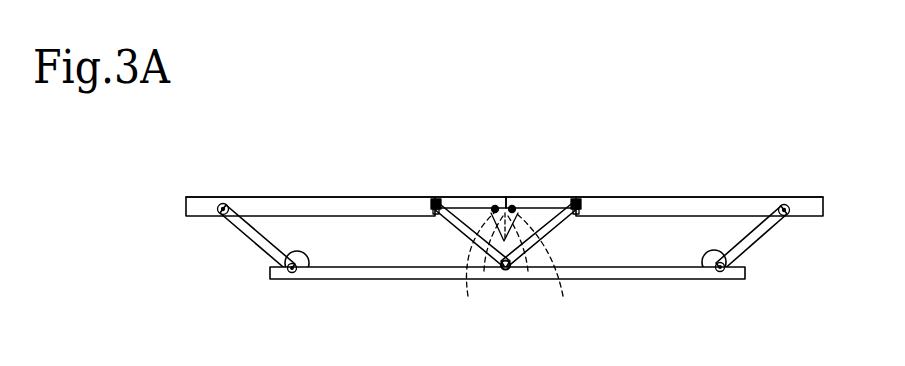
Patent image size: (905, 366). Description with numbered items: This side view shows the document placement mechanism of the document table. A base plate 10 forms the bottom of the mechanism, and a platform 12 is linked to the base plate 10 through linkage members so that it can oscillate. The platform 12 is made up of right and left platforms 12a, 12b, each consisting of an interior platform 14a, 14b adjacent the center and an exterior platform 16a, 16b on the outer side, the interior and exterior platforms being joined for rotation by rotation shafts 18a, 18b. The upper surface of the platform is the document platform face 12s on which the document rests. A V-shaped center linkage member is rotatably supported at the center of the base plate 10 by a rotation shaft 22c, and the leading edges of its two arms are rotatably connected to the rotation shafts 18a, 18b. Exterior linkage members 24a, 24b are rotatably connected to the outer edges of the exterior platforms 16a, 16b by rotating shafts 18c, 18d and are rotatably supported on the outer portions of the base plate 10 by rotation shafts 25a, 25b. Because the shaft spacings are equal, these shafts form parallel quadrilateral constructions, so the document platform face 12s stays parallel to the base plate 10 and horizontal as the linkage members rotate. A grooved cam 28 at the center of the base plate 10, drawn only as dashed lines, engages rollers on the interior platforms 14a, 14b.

The base plate 10 is at (658, 274).
The platform 12 is at (655, 57).
The right platform 12a is at (512, 109).
The left platform 12b is at (717, 111).
The document platform face 12s is at (790, 166).
The interior platform 14a is at (485, 196).
The interior platform 14b is at (544, 194).
The exterior platform 16a is at (377, 196).
The exterior platform 16b is at (683, 196).
The rotation shaft 18a is at (438, 213).
The rotation shaft 18b is at (578, 215).
The rotating shaft 18c is at (222, 203).
The rotating shaft 18d is at (790, 199).
The rotation shaft 22c is at (506, 281).
The exterior linkage member 24a is at (249, 228).
The exterior linkage member 24b is at (761, 236).
The rotation shaft 25a is at (291, 277).
The rotation shaft 25b is at (721, 277).
The grooved cam 28 is at (515, 273).